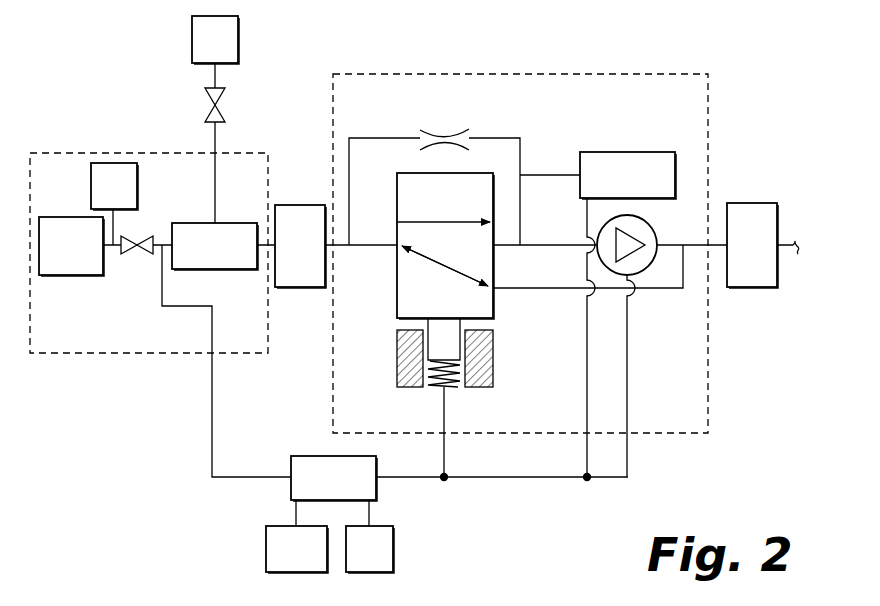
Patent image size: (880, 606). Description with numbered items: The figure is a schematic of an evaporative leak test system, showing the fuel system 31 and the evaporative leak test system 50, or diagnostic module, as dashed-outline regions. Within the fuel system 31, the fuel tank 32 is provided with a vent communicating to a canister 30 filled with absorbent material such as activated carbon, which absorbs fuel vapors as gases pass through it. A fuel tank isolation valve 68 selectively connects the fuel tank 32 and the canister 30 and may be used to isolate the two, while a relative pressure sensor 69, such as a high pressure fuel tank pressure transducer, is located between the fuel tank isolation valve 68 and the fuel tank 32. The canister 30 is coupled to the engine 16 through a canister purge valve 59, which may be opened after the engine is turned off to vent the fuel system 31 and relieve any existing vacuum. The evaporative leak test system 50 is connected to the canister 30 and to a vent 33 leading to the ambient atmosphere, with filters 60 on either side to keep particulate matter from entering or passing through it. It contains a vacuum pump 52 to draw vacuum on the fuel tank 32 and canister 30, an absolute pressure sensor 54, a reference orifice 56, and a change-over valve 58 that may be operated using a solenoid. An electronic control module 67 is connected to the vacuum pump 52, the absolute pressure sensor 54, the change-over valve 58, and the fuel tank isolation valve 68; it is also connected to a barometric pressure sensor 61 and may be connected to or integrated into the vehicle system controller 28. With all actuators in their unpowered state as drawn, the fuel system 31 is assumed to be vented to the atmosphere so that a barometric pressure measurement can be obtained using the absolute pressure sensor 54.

The engine 16 is at (215, 40).
The canister purge valve 59 is at (205, 97).
The fuel system 31 is at (148, 153).
The pressure sensor 69 is at (114, 186).
The fuel tank 32 is at (71, 246).
The fuel tank isolation valve 68 is at (130, 256).
The canister 30 is at (195, 223).
The filters 60 is at (313, 205).
The evaporative leak test system 50 is at (523, 74).
The reference orifice 56 is at (468, 130).
The change-over valve 58 is at (397, 200).
The absolute pressure sensor 54 is at (628, 175).
The vacuum pump 52 is at (633, 258).
The vent 33 is at (810, 246).
The electronic control module 67 is at (291, 470).
The vehicle system controller 28 is at (266, 548).
The barometric pressure sensor 61 is at (370, 549).